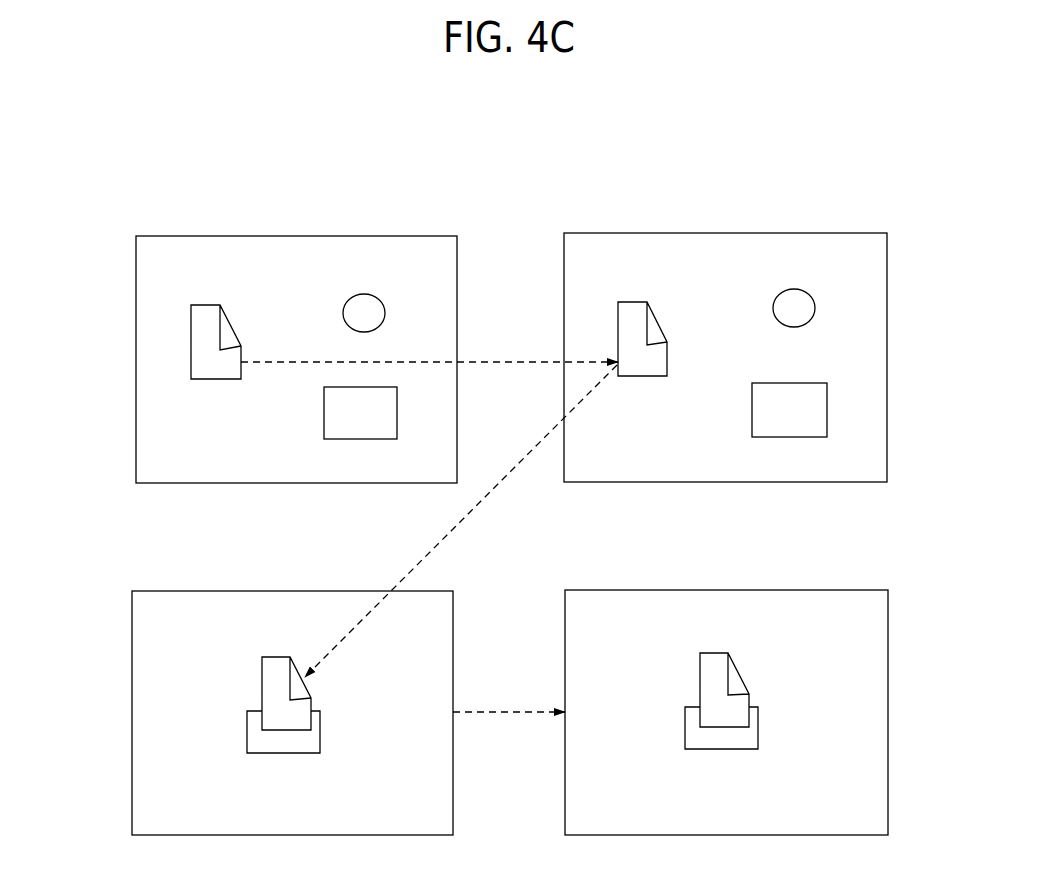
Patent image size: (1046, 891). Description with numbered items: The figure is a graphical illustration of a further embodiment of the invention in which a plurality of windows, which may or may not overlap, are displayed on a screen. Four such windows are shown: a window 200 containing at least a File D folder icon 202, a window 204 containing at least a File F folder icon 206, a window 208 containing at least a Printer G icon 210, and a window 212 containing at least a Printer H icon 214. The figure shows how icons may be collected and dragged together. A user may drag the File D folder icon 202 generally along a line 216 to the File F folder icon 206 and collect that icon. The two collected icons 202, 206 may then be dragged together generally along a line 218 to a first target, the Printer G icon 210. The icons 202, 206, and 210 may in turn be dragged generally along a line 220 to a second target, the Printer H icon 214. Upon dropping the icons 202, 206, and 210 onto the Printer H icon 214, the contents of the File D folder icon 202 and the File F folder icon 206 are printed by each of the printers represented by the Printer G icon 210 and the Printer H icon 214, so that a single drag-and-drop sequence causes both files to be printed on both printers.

The window 200 is at (137, 265).
The File D folder icon 202 is at (233, 322).
The window 204 is at (868, 227).
The File F folder icon 206 is at (660, 318).
The window 208 is at (188, 589).
The Printer G icon 210 is at (262, 678).
The window 212 is at (865, 587).
The Printer H icon 214 is at (717, 653).
The line 216 is at (493, 361).
The line 218 is at (482, 507).
The line 220 is at (507, 713).